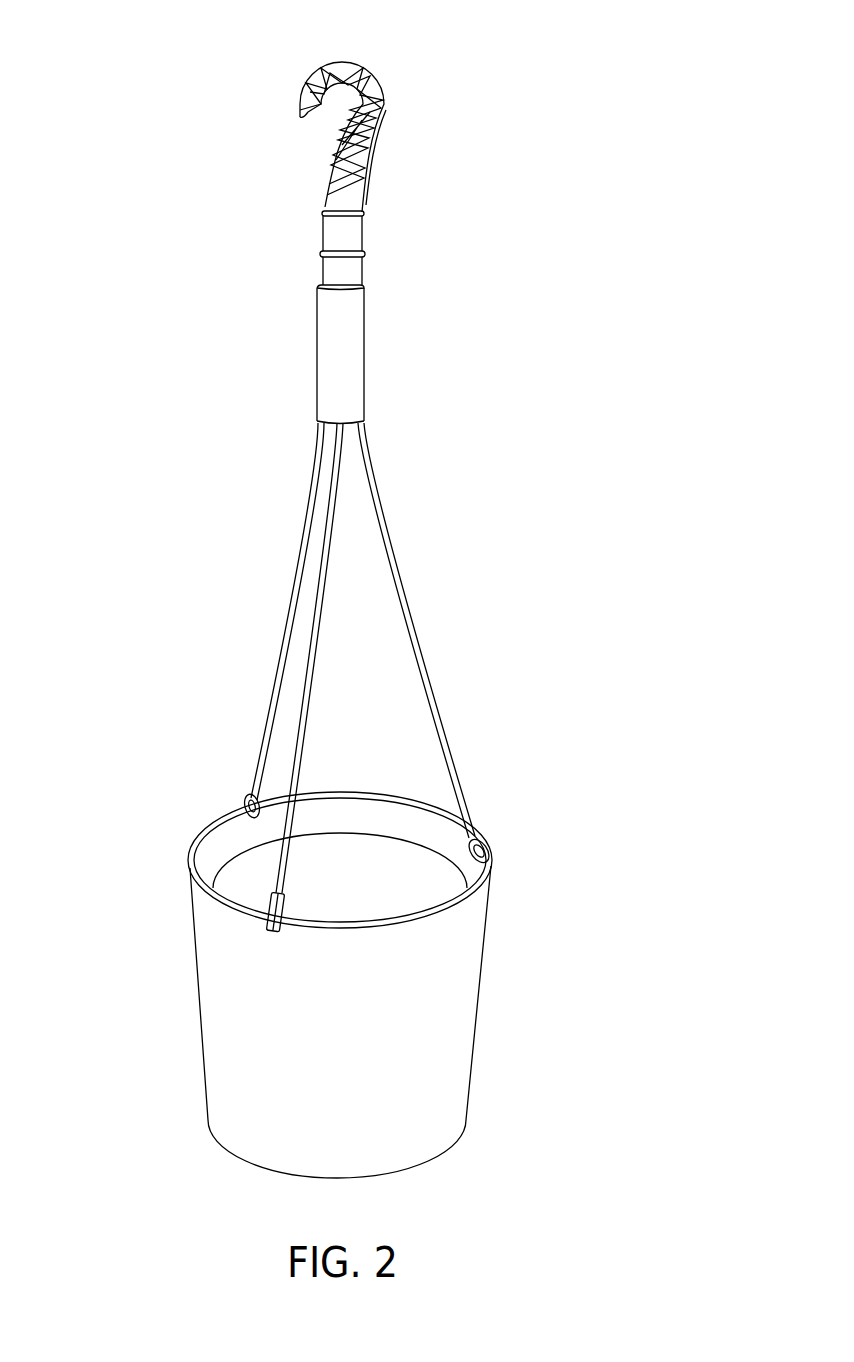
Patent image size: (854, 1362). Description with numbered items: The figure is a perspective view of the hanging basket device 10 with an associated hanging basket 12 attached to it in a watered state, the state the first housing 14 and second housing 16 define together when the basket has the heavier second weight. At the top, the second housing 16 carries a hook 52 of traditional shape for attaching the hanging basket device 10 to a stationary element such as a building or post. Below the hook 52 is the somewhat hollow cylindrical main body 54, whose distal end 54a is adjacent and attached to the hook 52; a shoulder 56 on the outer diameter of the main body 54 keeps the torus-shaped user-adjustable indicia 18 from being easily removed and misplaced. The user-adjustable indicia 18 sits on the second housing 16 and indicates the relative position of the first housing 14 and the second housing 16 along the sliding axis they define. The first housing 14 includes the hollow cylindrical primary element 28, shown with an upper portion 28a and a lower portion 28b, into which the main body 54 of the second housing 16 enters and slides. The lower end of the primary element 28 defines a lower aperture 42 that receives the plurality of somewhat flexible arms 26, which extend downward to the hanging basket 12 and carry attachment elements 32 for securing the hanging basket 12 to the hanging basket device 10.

The hanging basket device 10 is at (115, 72).
The hanging basket 12 is at (433, 1082).
The first housing 14 is at (570, 352).
The second housing 16 is at (195, 133).
The user-adjustable indicia 18 is at (374, 246).
The arms 26 is at (446, 691).
The primary element 28 is at (352, 368).
The sleeve first end 28a is at (379, 287).
The sleeve second end 28b is at (377, 412).
The attachment elements 32 is at (500, 848).
The lower aperture 42 is at (306, 441).
The hook 52 is at (344, 60).
The main body 54 is at (320, 264).
The distal end 54a is at (294, 223).
The shoulder 56 is at (374, 208).